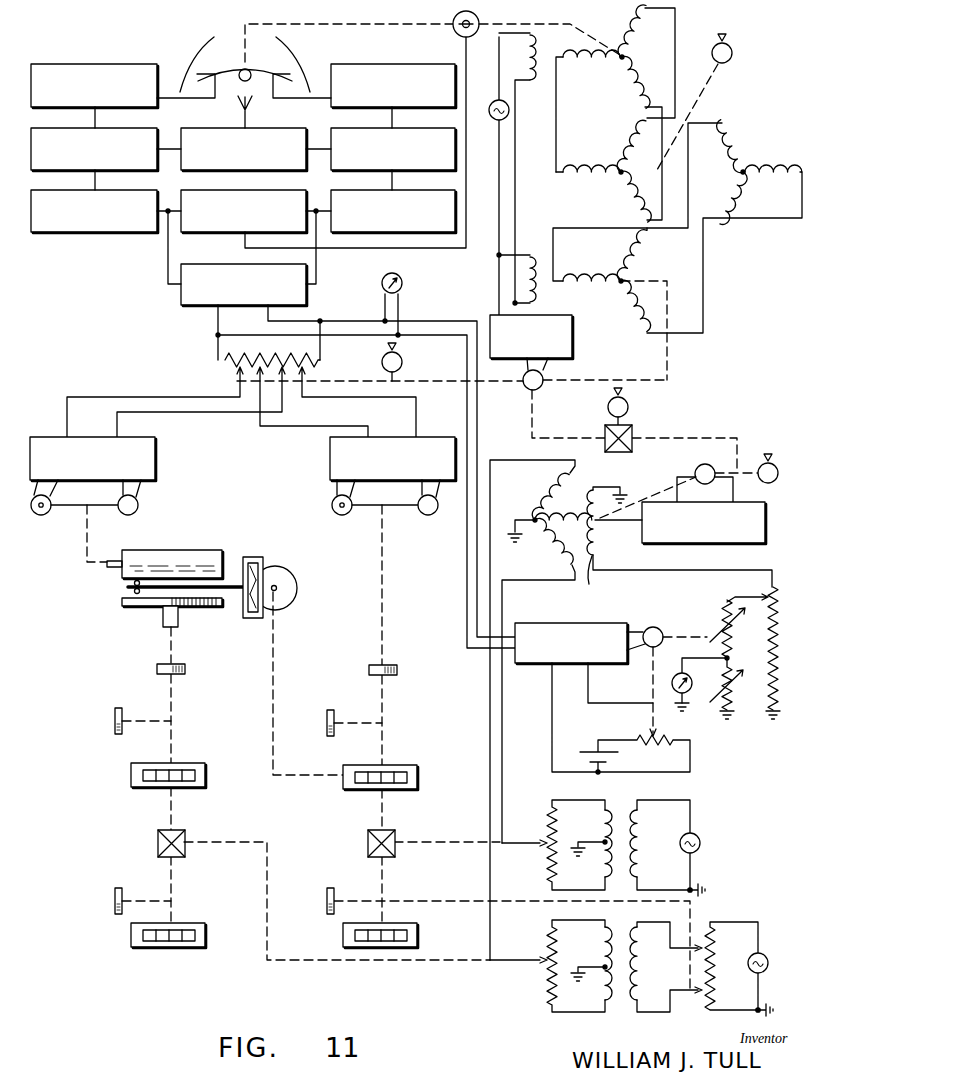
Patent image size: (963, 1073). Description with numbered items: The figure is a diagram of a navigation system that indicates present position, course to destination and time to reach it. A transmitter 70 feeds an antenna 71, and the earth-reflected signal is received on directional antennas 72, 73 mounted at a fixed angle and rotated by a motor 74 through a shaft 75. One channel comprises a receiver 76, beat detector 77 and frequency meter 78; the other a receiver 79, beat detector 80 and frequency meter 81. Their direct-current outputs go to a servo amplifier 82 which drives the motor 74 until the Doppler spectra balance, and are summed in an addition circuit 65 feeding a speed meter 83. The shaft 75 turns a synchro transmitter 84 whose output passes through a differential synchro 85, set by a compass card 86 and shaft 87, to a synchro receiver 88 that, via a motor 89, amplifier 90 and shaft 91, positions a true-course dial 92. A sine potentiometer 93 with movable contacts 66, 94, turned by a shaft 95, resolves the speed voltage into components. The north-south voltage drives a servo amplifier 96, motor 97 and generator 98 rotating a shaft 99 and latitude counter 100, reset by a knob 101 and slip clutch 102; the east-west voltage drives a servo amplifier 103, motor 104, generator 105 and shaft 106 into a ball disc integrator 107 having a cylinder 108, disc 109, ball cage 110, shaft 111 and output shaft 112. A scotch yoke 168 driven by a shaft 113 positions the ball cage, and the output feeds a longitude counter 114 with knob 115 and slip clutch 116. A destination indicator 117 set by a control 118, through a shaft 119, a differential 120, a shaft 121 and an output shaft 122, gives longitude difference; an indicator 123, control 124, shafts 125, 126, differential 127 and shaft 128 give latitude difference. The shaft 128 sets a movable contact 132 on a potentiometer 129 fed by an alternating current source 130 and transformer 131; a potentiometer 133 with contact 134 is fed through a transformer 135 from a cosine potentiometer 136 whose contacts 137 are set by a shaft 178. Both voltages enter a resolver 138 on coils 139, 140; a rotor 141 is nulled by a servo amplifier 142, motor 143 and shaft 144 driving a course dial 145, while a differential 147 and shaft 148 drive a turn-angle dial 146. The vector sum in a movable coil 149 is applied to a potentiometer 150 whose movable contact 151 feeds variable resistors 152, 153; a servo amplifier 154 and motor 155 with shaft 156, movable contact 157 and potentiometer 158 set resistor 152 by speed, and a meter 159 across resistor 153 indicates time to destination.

The addition circuit 65 is at (181, 296).
The movable contacts 66 is at (230, 398).
The transmitter 70 is at (278, 128).
The antenna 71 is at (238, 108).
The directional antenna 72 is at (183, 50).
The directional antenna 73 is at (303, 50).
The motor 74 is at (449, 34).
The shaft 75 is at (381, 24).
The receiver 76 is at (42, 64).
The beat detector 77 is at (57, 127).
The frequency meter 78 is at (70, 190).
The receiver 79 is at (401, 64).
The beat detector 80 is at (408, 128).
The frequency meter 81 is at (410, 190).
The servo amplifier 82 is at (258, 191).
The meter 83 is at (400, 278).
The synchro transmitter 84 is at (620, 56).
The differential synchro 85 is at (621, 172).
The compass card 86 is at (732, 53).
The shaft 87 is at (693, 107).
The synchro receiver 88 is at (620, 280).
The motor 89 is at (525, 388).
The amplifier 90 is at (573, 320).
The shaft 91 is at (668, 360).
The dial 92 is at (402, 362).
The sine potentiometer 93 is at (225, 360).
The movable contacts 94 is at (260, 423).
The shaft 95 is at (355, 381).
The servo amplifier 96 is at (435, 437).
The motor 97 is at (332, 505).
The error feedback generator 98 is at (430, 516).
The shaft 99 is at (385, 590).
The counter 100 is at (417, 777).
The manual knob 101 is at (326, 722).
The slip clutch 102 is at (397, 670).
The servo amplifier 103 is at (157, 462).
The motor 104 is at (35, 516).
The generator 105 is at (125, 516).
The shaft 106 is at (83, 530).
The ball disc integrator 107 is at (105, 585).
The cylinder 108 is at (160, 549).
The circular disc 109 is at (200, 608).
The ball cage 110 is at (130, 590).
The shaft 111 is at (232, 585).
The shaft 112 is at (163, 615).
The shaft 113 is at (273, 653).
The counter 114 is at (131, 775).
The manual knob 115 is at (113, 716).
The slip clutch 116 is at (185, 668).
The indicator 117 is at (131, 935).
The manual control 118 is at (113, 900).
The shaft 119 is at (171, 880).
The differential 120 is at (158, 842).
The shaft 121 is at (171, 810).
The output shaft 122 is at (252, 842).
The indicator 123 is at (343, 935).
The manual control 124 is at (326, 902).
The shaft 125 is at (382, 878).
The shaft 126 is at (382, 812).
The differential 127 is at (368, 842).
The shaft 128 is at (455, 843).
The potentiometer 129 is at (548, 820).
The alternating current source 130 is at (700, 838).
The transformer 131 is at (620, 803).
The movable contact 132 is at (505, 848).
The potentiometer 133 is at (545, 978).
The movable contact 134 is at (518, 950).
The transformer 135 is at (622, 1005).
The cosine potentiometer 136 is at (712, 932).
The movable contacts 137 is at (698, 947).
The resolver 138 is at (575, 482).
The coil 139 is at (540, 498).
The coil 140 is at (550, 550).
The rotor 141 is at (605, 530).
The servo amplifier 142 is at (718, 545).
The motor 143 is at (697, 467).
The shaft 144 is at (635, 500).
The dial 145 is at (768, 461).
The dial 146 is at (630, 400).
The differential 147 is at (603, 436).
The shaft 148 is at (630, 422).
The movable coil 149 is at (600, 578).
The potentiometer 150 is at (780, 657).
The movable contact 151 is at (746, 597).
The variable resistor 152 is at (723, 613).
The variable resistor 153 is at (739, 690).
The servo amplifier 154 is at (570, 622).
The motor 155 is at (647, 626).
The shaft 156 is at (651, 684).
The movable contact 157 is at (650, 715).
The potentiometer 158 is at (664, 744).
The meter 159 is at (677, 672).
The scotch yoke 168 is at (298, 573).
The shaft 178 is at (450, 902).